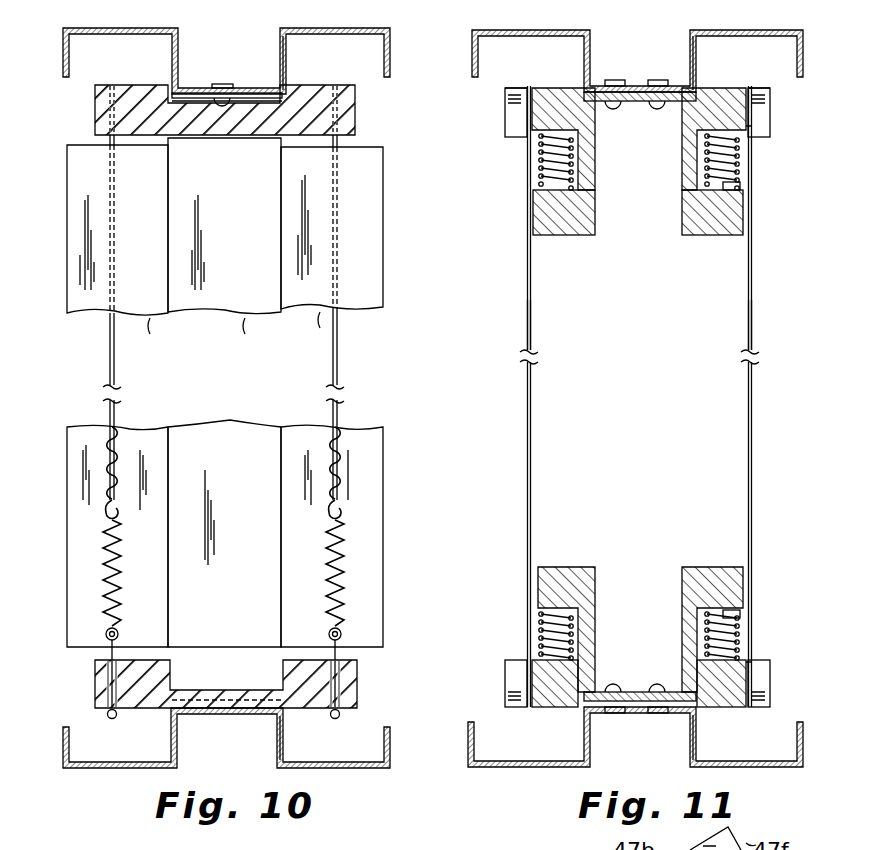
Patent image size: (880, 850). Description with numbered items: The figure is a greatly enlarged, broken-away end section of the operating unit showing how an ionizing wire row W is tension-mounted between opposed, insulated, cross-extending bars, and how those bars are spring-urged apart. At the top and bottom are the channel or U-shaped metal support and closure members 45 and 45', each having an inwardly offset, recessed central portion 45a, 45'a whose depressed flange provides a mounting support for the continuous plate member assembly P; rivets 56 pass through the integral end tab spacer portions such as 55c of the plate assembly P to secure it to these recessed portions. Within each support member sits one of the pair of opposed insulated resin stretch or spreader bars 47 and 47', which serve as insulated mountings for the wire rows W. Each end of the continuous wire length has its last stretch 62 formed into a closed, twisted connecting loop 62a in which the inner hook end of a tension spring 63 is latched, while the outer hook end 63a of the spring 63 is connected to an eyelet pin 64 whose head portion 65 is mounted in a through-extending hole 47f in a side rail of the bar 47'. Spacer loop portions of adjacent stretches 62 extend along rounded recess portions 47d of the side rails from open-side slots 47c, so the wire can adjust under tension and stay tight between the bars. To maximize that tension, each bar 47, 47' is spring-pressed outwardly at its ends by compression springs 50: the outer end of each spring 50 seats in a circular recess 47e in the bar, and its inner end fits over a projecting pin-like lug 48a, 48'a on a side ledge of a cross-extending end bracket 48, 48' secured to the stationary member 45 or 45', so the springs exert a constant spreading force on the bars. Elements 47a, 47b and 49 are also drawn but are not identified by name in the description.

In FIG. 10, the upper metal support and closure member 45 is at (226, 48).
In FIG. 11, the upper metal support and closure member 45 is at (637, 47).
In FIG. 10, the recessed central portion 45a is at (280, 62).
In FIG. 11, the recessed central portion 45a is at (686, 60).
In FIG. 10, the lower metal support and closure member 45' is at (226, 755).
In FIG. 11, the lower metal support and closure member 45' is at (635, 754).
In FIG. 10, the recessed central portion 45'a is at (253, 739).
In FIG. 11, the recessed central portion 45'a is at (664, 749).
In FIG. 10, the insulated wire mounting bar 47 is at (247, 110).
In FIG. 11, the insulated wire mounting bar 47 is at (636, 135).
In FIG. 10, the insulated wire mounting bar 47' is at (226, 653).
In FIG. 11, the insulated wire mounting bar 47' is at (639, 683).
In FIG. 10, the leaf spring strip 47a is at (232, 698).
In FIG. 11, the central plate 47b is at (590, 120).
In FIG. 11, the open-side slot 47c is at (767, 116).
In FIG. 11, the rounded recess portion 47d is at (514, 87).
In FIG. 11, the circular recess 47e is at (757, 137).
In FIG. 10, the through-extending hole 47f is at (95, 686).
In FIG. 11, the support bracket 48 is at (638, 230).
In FIG. 11, the mounting lug 48a is at (727, 203).
In FIG. 11, the support bracket 48' is at (640, 608).
In FIG. 11, the mounting lug 48'a is at (769, 610).
In FIG. 11, the spacer pads 49 is at (658, 80).
In FIG. 11, the compression spring 50 is at (538, 163).
In FIG. 10, the end tab spacer portion 55c is at (262, 100).
In FIG. 10, the rivet 56 is at (223, 84).
In FIG. 10, the wire stretch 62 is at (108, 337).
In FIG. 11, the wire stretch 62 is at (523, 404).
In FIG. 10, the connecting loop 62a is at (102, 513).
In FIG. 10, the tension spring 63 is at (118, 573).
In FIG. 10, the lower loop of spring 63a is at (104, 628).
In FIG. 10, the eyelet pin 64 is at (100, 655).
In FIG. 10, the head portion 65 is at (114, 719).
In FIG. 10, the plate member assembly P is at (383, 212).
In FIG. 11, the ionizing wire row W is at (526, 319).